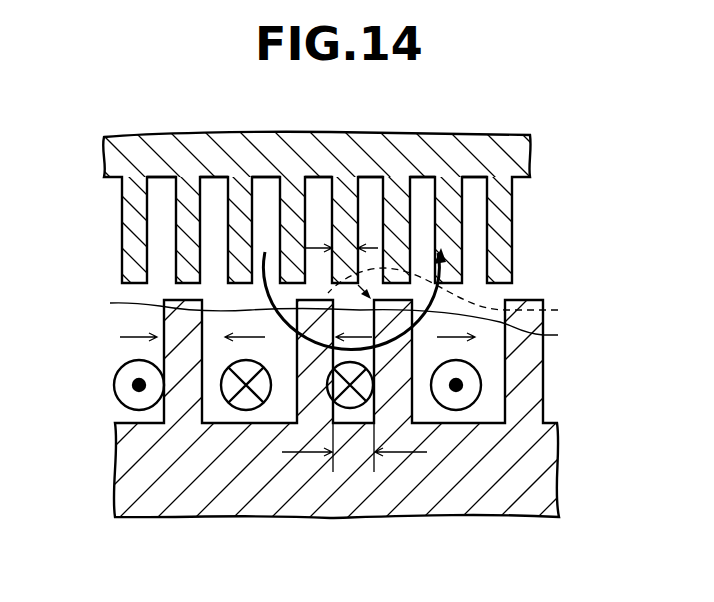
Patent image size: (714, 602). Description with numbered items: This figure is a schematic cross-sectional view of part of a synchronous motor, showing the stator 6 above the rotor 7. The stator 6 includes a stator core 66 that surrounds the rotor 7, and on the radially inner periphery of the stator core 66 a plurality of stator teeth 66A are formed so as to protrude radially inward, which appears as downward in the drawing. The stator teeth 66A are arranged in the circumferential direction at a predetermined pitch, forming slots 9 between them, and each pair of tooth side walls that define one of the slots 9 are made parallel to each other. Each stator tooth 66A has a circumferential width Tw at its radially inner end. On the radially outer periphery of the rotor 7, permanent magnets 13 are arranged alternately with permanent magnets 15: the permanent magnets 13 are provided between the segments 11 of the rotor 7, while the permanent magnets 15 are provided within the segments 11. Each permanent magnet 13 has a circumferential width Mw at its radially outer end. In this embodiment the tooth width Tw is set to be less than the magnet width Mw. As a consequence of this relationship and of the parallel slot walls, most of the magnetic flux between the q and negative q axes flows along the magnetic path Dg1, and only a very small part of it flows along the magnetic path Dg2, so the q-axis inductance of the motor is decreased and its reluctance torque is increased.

The stator 6 is at (151, 150).
The slots 9 is at (265, 185).
The stator core 66 is at (478, 142).
The stator teeth 66A is at (187, 255).
The permanent magnets 13 is at (137, 315).
The segments 11 is at (533, 378).
The permanent magnets 15 is at (278, 412).
The rotor 7 is at (460, 497).
The circumferential width of stator teeth Tw is at (347, 246).
The circumferential width of permanent magnets Mw is at (354, 451).
The magnetic path Dg1 is at (357, 326).
The magnetic path Dg2 is at (466, 295).